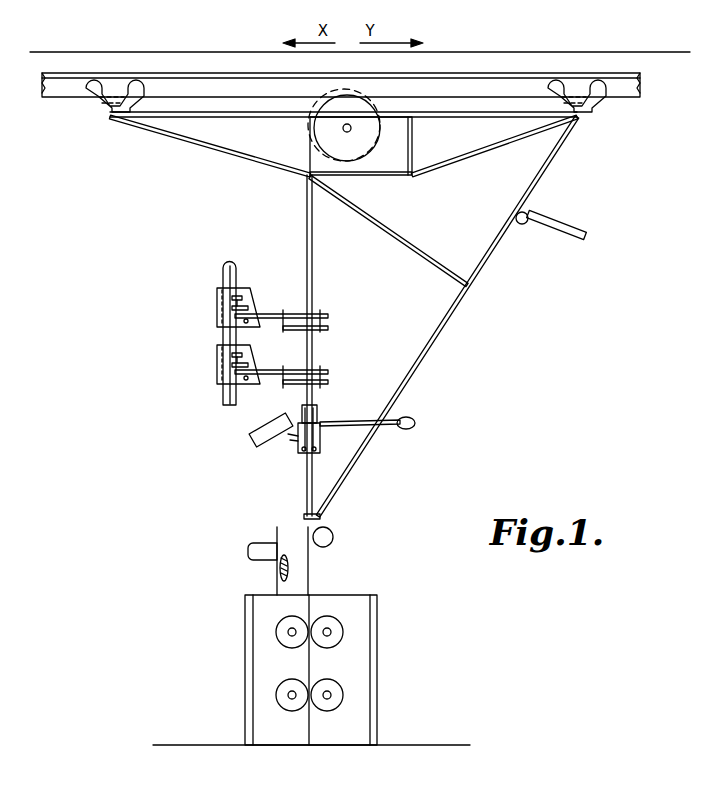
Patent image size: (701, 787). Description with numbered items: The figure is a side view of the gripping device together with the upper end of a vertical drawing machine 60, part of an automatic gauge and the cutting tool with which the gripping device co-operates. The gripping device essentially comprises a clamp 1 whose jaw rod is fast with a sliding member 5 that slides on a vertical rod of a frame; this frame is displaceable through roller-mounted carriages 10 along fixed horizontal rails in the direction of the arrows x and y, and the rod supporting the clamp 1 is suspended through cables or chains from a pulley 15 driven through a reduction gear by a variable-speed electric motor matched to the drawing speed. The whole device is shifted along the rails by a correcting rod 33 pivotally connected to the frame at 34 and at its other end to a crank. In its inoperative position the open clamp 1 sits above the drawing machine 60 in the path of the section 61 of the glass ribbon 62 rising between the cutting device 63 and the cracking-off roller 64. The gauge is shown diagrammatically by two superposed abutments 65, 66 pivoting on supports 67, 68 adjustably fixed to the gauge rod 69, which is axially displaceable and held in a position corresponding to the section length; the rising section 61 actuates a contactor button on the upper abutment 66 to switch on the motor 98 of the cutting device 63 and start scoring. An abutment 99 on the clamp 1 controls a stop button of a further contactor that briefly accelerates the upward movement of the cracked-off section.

The clamp 1 is at (302, 448).
The sliding member 5 is at (325, 347).
The carriage 10 is at (105, 106).
The pulley 15 is at (340, 138).
The correcting rod 33 is at (558, 228).
The pivot connection 34 is at (529, 216).
The vertical drawing machine 60 is at (348, 651).
The section of the glass ribbon 61 is at (321, 523).
The glass ribbon 62 is at (312, 566).
The cutting device 63 is at (300, 552).
The cracking-off roller 64 is at (334, 535).
The lower abutment 65 is at (296, 382).
The upper abutment 66 is at (293, 331).
The support 67 is at (225, 358).
The support 68 is at (238, 290).
The gauge rod 69 is at (222, 272).
The motor of the cutting device 98 is at (264, 548).
The abutment 99 is at (414, 428).